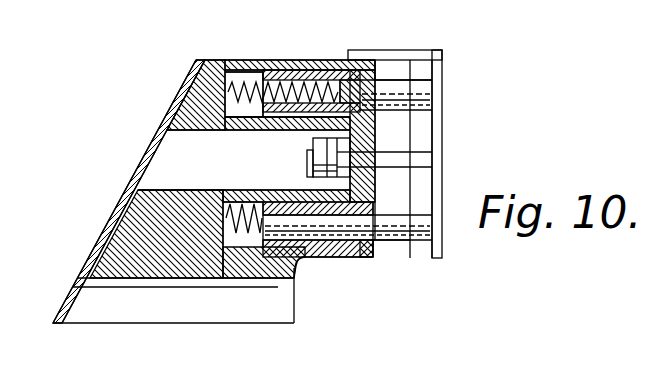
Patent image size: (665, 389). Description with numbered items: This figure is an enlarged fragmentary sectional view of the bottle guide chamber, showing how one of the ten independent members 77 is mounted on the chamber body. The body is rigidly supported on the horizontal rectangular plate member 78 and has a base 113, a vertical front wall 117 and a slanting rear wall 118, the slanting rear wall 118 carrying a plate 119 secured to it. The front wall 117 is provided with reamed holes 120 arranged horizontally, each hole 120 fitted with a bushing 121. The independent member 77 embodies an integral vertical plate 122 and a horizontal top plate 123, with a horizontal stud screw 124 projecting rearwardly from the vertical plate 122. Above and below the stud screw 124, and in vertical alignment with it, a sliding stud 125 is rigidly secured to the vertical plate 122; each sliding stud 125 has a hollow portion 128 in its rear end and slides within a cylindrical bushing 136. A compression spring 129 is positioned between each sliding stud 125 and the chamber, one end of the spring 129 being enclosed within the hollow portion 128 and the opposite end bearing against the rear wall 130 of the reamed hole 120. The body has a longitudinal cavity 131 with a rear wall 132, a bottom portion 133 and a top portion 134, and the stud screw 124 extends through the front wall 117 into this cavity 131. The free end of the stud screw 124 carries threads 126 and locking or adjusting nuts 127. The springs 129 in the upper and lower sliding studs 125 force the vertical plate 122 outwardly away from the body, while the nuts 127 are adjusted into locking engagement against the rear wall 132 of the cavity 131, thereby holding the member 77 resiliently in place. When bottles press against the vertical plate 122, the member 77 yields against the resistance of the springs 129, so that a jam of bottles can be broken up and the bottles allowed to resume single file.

The independent member 77 is at (443, 52).
The horizontal rectangular plate member 78 is at (155, 316).
The base 113 is at (282, 282).
The vertical front wall 117 is at (372, 196).
The slanting rear wall 118 is at (192, 72).
The plate 119 is at (163, 130).
The reamed hole 120 is at (247, 78).
The bushing 121 is at (330, 243).
The vertical plate portion 122 is at (437, 98).
The horizontal top plate portion 123 is at (409, 53).
The stud screw 124 is at (427, 156).
The sliding stud 125 is at (403, 98).
The threads 126 is at (310, 170).
The locking nuts 127 is at (341, 144).
The hollow portion 128 is at (318, 93).
The compression spring 129 is at (238, 122).
The rear wall of reamed hole 130 is at (232, 75).
The cavity 131 is at (216, 166).
The rear wall 132 is at (330, 174).
The bottom portion 133 is at (203, 190).
The top portion 134 is at (298, 132).
The cylindrical bushing 136 is at (368, 246).